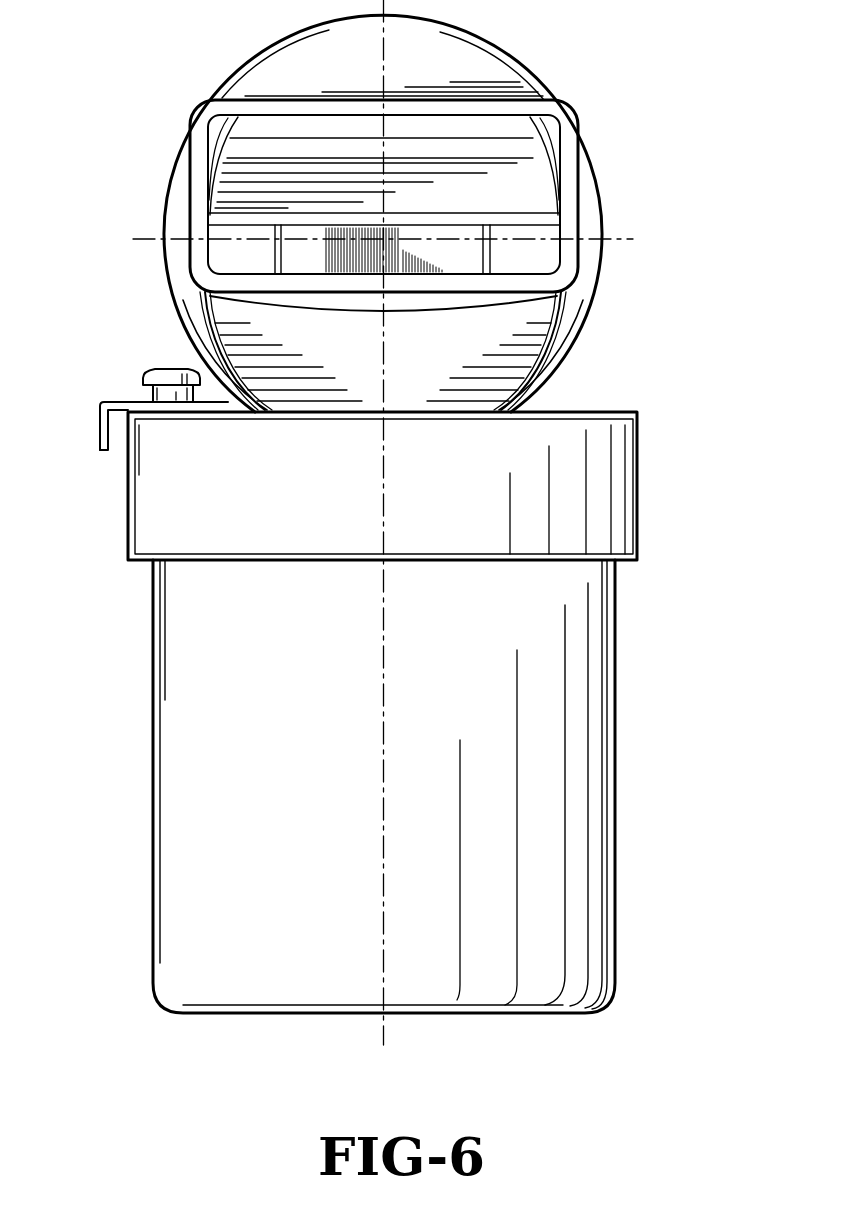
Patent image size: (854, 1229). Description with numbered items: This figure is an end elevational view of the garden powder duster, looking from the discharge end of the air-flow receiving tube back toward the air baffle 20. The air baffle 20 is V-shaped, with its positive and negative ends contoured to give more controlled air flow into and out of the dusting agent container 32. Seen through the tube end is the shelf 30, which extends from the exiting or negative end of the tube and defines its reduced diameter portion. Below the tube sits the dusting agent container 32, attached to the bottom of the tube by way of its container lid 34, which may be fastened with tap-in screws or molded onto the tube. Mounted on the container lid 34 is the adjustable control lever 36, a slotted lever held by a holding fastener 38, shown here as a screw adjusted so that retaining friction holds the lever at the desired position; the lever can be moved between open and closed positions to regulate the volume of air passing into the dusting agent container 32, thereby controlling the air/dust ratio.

The air baffle 20 is at (485, 147).
The shelf 30 is at (517, 220).
The dusting agent container 32 is at (622, 718).
The container lid 34 is at (638, 482).
The adjustable control lever 36 is at (104, 428).
The screw 38 is at (167, 372).